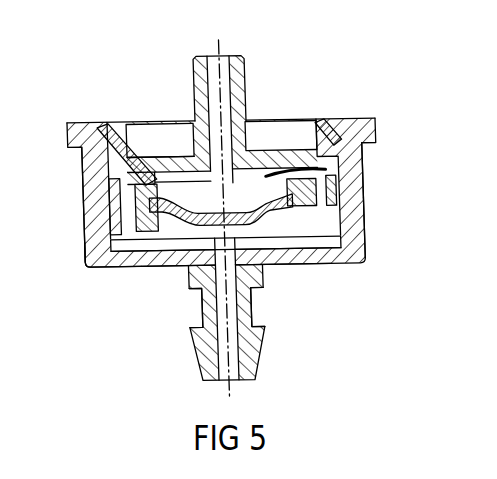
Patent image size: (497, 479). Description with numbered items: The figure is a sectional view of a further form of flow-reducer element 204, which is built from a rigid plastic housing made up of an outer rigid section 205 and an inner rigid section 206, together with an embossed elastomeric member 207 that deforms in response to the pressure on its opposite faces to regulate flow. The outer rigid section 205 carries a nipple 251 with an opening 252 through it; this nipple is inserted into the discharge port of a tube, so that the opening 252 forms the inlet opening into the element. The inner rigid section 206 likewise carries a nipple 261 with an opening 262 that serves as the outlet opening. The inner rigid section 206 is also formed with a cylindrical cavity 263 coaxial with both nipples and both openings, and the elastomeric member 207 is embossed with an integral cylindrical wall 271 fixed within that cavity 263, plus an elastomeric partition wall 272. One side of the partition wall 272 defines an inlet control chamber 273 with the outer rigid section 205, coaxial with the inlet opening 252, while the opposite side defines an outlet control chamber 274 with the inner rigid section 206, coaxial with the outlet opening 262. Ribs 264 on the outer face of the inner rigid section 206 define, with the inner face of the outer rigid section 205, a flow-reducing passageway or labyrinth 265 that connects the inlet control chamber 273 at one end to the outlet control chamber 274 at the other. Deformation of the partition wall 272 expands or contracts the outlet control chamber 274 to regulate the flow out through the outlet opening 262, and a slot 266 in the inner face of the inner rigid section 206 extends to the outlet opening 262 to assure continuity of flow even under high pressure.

The flow-reducer element 204 is at (343, 97).
The outer rigid section 205 is at (80, 160).
The inner rigid section 206 is at (276, 150).
The elastomeric member 207 is at (278, 266).
The nipple 251 is at (257, 365).
The opening 252 is at (204, 320).
The nipple 261 is at (197, 72).
The opening 262 is at (229, 58).
The cavity 263 is at (125, 270).
The ribs 264 is at (83, 195).
The flow-reducing passageway 265 is at (83, 228).
The slot 266 is at (183, 160).
The cylindrical wall 271 is at (365, 213).
The elastomeric partition wall 272 is at (365, 174).
The inlet control chamber 273 is at (150, 267).
The outlet control chamber 274 is at (157, 165).